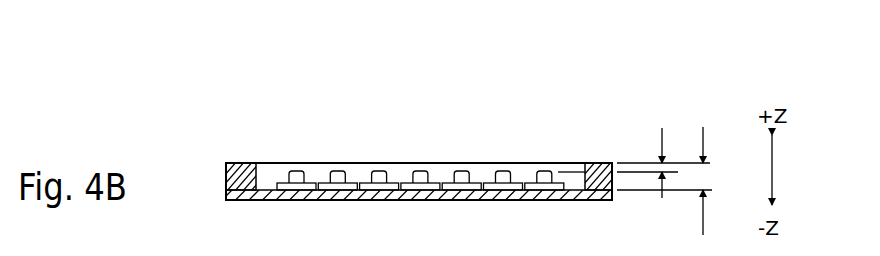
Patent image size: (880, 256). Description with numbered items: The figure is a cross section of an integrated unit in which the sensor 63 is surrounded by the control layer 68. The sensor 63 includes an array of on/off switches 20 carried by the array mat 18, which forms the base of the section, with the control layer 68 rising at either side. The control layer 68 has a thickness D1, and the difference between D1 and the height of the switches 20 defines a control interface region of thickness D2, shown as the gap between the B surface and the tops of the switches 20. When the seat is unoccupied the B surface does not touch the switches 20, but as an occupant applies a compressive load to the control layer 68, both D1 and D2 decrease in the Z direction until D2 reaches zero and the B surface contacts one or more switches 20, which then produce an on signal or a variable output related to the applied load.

The array mat 18 is at (552, 200).
The control layer 68 is at (243, 162).
The sensor 63 is at (439, 183).
The on/off switches 20 is at (337, 171).
The B surface B is at (529, 163).
The thickness of the control layer D1 is at (669, 191).
The thickness of the control interface region D2 is at (663, 150).